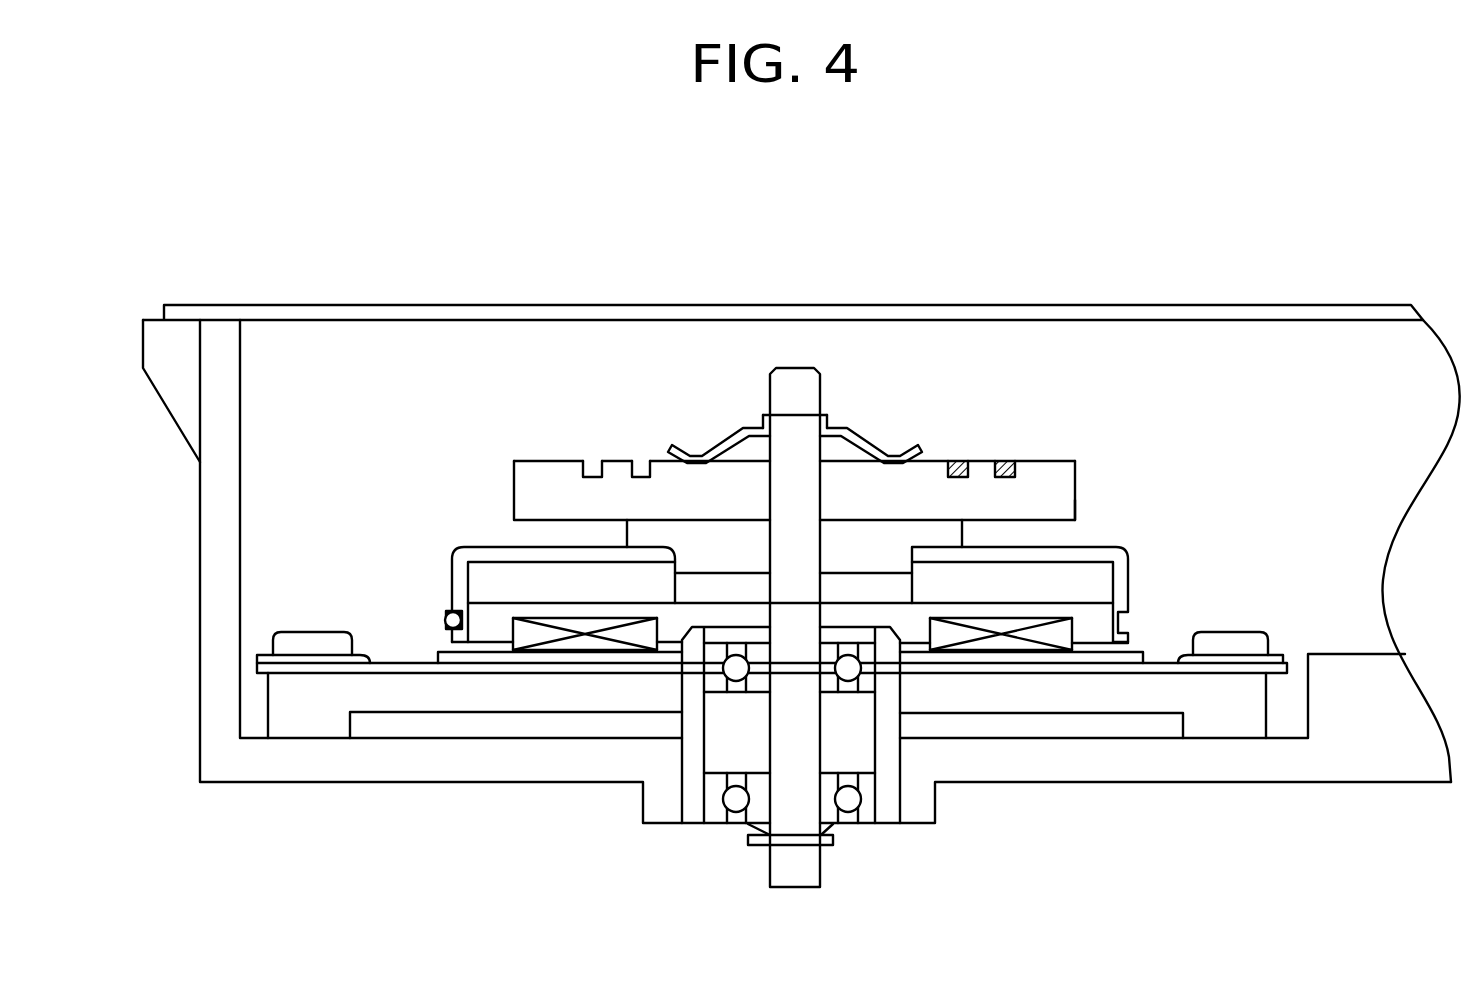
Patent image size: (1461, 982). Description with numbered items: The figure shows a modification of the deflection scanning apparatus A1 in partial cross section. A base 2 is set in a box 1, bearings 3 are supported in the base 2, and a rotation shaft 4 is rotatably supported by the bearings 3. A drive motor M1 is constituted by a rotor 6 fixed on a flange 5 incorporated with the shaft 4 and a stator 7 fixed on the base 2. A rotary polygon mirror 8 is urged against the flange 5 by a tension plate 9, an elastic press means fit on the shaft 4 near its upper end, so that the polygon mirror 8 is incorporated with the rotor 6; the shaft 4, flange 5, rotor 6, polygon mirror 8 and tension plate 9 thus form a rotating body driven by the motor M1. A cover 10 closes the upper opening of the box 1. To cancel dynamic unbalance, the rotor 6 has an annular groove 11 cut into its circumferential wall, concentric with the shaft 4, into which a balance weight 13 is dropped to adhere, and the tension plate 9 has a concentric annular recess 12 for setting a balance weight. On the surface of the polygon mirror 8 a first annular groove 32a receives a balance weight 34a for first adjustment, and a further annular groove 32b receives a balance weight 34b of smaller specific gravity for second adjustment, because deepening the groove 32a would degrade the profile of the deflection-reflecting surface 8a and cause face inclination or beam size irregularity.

The box 1 is at (458, 768).
The base 2 is at (305, 728).
The bearings 3 is at (717, 813).
The rotation shaft 4 is at (780, 395).
The flange 5 is at (921, 533).
The rotor 6 is at (1087, 592).
The stator 7 is at (998, 650).
The rotary polygon mirror 8 is at (1023, 472).
The deflection-reflecting surface 8a is at (1076, 512).
The tension plate 9 is at (722, 440).
The cover 10 is at (345, 312).
The annular groove 11 is at (1128, 620).
The annular recess 12 is at (900, 447).
The balance weight 13 is at (445, 620).
The annular groove 32a is at (597, 460).
The annular groove 32b is at (640, 462).
The balance weight 34a is at (1008, 470).
The balance weight 34b is at (962, 465).
The deflection scanning apparatus A1 is at (248, 218).
The drive motor M1 is at (1149, 856).